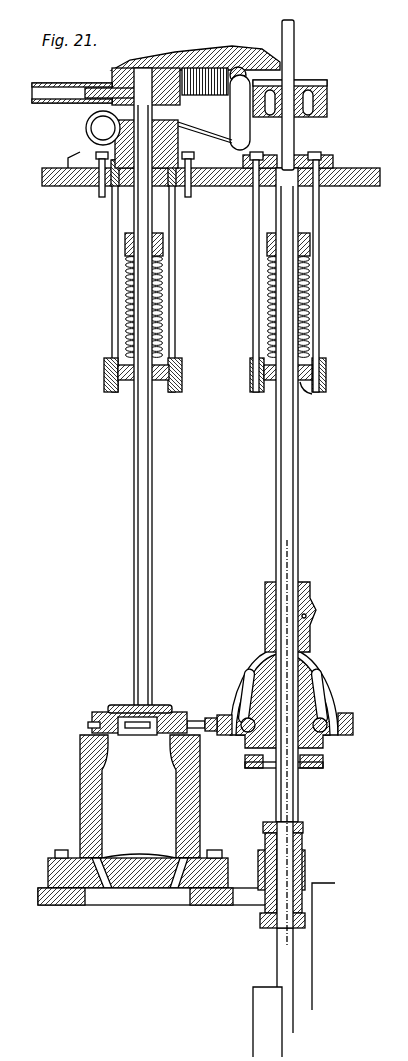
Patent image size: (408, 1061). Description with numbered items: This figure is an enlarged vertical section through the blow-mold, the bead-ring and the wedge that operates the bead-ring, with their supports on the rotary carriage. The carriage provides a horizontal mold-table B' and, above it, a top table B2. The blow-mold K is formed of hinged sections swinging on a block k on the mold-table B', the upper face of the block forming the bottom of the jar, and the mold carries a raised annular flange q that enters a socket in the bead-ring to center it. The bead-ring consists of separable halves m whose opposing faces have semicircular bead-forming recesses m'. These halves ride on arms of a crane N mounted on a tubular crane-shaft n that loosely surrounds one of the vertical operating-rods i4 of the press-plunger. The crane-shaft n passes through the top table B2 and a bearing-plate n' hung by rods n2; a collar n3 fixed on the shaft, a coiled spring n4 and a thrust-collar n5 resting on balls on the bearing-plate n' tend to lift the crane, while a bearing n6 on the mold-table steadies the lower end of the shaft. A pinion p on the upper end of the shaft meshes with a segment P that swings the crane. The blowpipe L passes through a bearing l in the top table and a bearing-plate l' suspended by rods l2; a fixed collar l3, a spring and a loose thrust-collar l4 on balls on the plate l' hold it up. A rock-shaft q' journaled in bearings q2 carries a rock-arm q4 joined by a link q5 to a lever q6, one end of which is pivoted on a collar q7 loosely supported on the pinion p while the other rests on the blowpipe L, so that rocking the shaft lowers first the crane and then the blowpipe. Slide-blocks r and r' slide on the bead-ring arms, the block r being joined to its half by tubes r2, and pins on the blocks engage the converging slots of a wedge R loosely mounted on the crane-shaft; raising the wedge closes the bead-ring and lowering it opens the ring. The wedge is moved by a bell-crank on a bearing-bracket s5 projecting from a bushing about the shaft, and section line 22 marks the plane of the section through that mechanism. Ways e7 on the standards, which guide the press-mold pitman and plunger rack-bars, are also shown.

The top table B2 is at (211, 186).
The mold-table B' is at (186, 946).
The bearing-plate n' is at (310, 268).
The rods l2 is at (112, 252).
The fixed collar l3 is at (162, 240).
The bearing-plate l' is at (124, 375).
The loose thrust-collar l4 is at (165, 363).
The depending rods or hangers n2 is at (258, 231).
The collar n3 is at (310, 244).
The coiled spring n4 is at (306, 296).
The thrust-collar n5 is at (312, 394).
The lever q6 is at (211, 53).
The segment P is at (190, 78).
The link q5 is at (238, 127).
The pinion p is at (325, 101).
The collar q7 is at (312, 79).
The bearing l is at (113, 144).
The rock-shaft q' is at (92, 128).
The rock-arm q4 is at (197, 136).
The bearings q2 is at (80, 162).
The blowpipe L is at (146, 484).
The wedge R is at (246, 666).
The crane N is at (293, 675).
The slide-block r is at (222, 711).
The slide-block r' is at (356, 711).
The tubes r2 is at (205, 733).
The tubular crane-shaft n is at (302, 495).
The vertical operating-rods i4 is at (294, 44).
The bead-ring sections m is at (128, 710).
The bead forming recesses m' is at (137, 729).
The raised annular flange q is at (72, 726).
The blow-mold K is at (90, 782).
The block k is at (48, 868).
The bearing n6 is at (305, 863).
The bearing-bracket s5 is at (304, 838).
The section line 22 is at (296, 549).
The ways e7 is at (276, 1005).